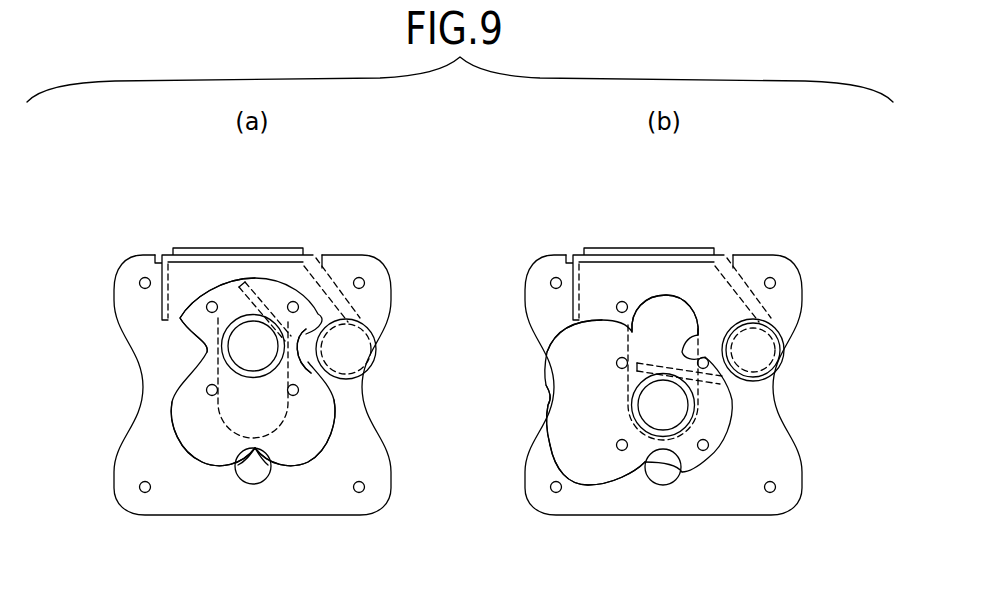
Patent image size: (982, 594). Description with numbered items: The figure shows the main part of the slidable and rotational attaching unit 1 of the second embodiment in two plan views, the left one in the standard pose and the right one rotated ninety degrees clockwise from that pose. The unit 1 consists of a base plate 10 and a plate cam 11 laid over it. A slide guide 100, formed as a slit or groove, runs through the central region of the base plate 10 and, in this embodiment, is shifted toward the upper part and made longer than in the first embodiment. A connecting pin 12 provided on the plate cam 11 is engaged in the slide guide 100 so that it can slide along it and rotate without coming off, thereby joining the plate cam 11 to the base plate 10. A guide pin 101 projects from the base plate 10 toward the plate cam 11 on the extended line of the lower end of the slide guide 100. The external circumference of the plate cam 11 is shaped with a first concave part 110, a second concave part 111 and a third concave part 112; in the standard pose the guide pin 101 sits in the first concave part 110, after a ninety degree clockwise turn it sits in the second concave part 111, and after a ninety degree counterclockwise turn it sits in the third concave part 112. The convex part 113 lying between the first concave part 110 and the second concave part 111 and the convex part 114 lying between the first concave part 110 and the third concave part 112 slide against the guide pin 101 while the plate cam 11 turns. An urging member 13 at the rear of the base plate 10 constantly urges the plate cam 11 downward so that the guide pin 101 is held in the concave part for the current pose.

The slidable and rotational attaching unit 1 is at (372, 225).
The base plate 10 is at (340, 270).
The plate cam 11 is at (263, 281).
The connecting pin 12 is at (237, 338).
The urging member 13 is at (368, 374).
The slide guide 100 is at (645, 322).
The guide pin 101 is at (268, 480).
The first concave part 110 is at (258, 450).
The second concave part 111 is at (300, 334).
The third concave part 112 is at (203, 346).
The convex part 113 is at (335, 428).
The convex part 114 is at (170, 430).